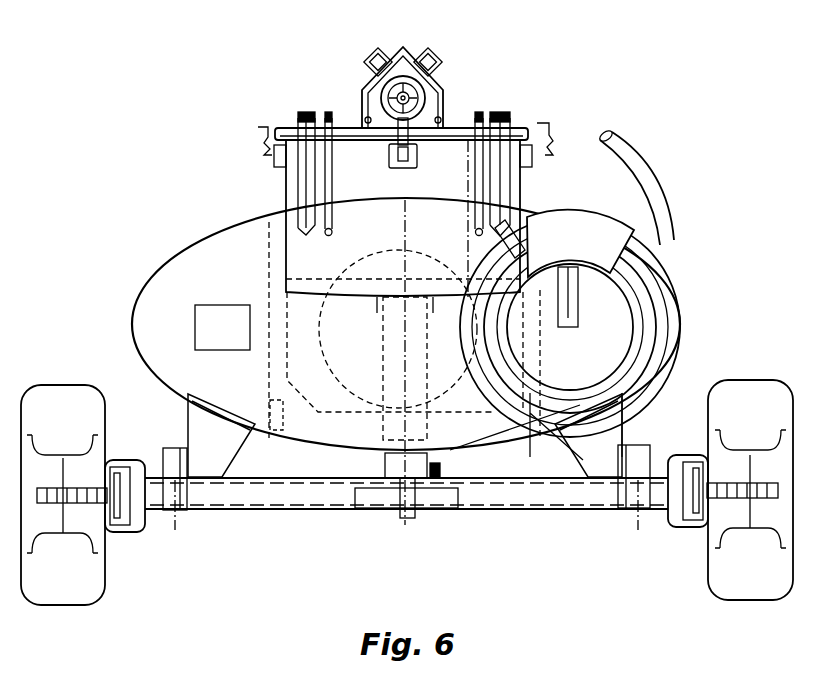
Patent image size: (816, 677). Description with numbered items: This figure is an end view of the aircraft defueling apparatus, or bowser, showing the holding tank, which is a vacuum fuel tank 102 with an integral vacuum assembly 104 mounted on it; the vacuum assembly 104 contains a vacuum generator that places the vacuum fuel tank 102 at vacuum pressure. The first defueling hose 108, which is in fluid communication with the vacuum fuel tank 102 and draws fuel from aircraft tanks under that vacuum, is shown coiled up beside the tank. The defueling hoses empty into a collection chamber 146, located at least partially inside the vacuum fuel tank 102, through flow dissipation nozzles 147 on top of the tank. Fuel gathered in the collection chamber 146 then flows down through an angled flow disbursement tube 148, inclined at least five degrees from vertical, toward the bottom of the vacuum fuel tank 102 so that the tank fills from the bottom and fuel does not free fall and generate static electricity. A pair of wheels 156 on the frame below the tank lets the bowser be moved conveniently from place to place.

The vacuum fuel tank 102 is at (132, 320).
The vacuum assembly 104 is at (470, 86).
The first defueling hose 108 is at (648, 180).
The collection chamber 146 is at (267, 255).
The flow dissipation nozzles 147 is at (562, 52).
The angled flow disbursement tube 148 is at (382, 432).
The wheels 156 is at (60, 600).